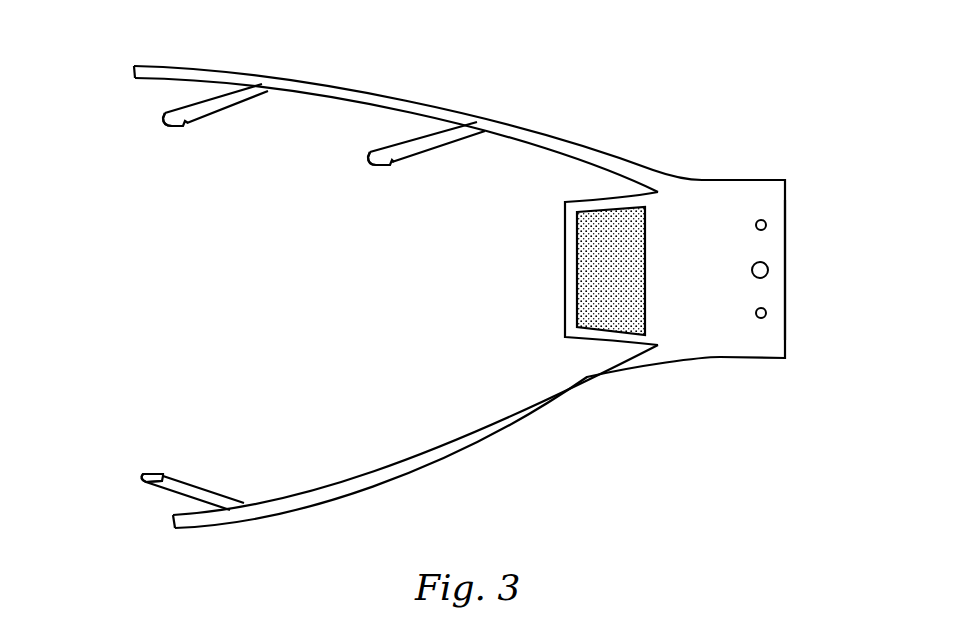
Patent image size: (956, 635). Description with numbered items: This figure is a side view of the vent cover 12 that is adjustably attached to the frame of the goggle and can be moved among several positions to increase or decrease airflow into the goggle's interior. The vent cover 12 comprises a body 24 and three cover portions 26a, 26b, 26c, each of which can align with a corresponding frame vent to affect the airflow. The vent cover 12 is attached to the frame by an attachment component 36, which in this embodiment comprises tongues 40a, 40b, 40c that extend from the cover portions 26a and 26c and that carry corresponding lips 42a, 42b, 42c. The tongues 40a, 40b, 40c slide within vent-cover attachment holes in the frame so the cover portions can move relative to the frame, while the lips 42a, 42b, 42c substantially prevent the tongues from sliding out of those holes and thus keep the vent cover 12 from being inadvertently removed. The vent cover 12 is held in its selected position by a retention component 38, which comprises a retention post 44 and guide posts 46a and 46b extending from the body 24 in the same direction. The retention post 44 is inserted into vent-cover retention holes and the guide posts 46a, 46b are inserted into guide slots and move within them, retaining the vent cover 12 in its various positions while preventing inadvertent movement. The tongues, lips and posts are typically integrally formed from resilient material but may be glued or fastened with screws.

The vent cover 12 is at (651, 402).
The body 24 is at (703, 179).
The cover portion 26a is at (331, 78).
The cover portion 26b is at (565, 274).
The cover portion 26c is at (288, 523).
The attachment component 36 is at (171, 102).
The retention component 38 is at (815, 191).
The tongue 40a is at (232, 108).
The tongue 40b is at (451, 141).
The tongue 40c is at (213, 497).
The lip 42a is at (185, 129).
The lip 42b is at (382, 170).
The lip 42c is at (150, 470).
The retention post 44 is at (769, 272).
The guide post 46a is at (767, 225).
The guide post 46b is at (767, 315).